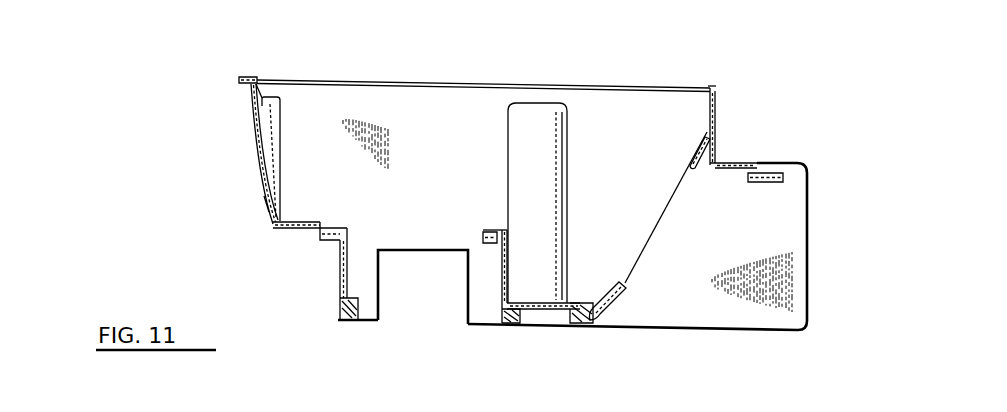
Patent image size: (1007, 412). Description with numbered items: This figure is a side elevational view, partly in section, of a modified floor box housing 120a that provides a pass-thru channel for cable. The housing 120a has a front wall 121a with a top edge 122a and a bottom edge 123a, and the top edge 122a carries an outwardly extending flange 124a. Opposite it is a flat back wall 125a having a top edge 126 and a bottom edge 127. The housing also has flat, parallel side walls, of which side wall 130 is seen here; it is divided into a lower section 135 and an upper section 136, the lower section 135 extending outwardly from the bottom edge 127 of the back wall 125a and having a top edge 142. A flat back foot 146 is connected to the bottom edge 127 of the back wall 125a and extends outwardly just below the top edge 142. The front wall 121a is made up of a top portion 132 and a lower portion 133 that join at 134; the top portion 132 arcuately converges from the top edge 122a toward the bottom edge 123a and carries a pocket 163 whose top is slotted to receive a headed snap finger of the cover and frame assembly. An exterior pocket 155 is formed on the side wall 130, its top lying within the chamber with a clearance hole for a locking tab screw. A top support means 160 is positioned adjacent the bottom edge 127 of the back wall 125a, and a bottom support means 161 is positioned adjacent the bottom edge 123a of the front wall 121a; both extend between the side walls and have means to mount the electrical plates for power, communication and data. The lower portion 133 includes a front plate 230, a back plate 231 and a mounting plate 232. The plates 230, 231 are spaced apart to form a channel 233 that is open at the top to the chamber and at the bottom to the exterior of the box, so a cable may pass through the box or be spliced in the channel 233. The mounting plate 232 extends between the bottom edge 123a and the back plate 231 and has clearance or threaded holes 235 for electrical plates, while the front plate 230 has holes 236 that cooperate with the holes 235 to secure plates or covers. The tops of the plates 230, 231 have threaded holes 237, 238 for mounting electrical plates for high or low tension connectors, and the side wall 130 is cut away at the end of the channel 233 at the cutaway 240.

The housing 120a is at (507, 84).
The front wall 121a is at (253, 147).
The top edge 122a is at (255, 78).
The bottom edge 123a is at (596, 329).
The outwardly extending flange 124a is at (253, 84).
The flat back wall 125a is at (716, 112).
The top edge 126 is at (713, 88).
The bottom edge 127 is at (711, 168).
The side wall 130 is at (457, 158).
The top portion 132 is at (264, 198).
The lower portion 133 is at (338, 295).
The junction 134 is at (275, 228).
The lower section 135 is at (745, 255).
The upper section 136 is at (647, 125).
The top edge 142 is at (800, 163).
The flat back foot 146 is at (753, 163).
The exterior pocket 155 is at (535, 213).
The top support means 160 is at (695, 160).
The bottom support means 161 is at (620, 301).
The pocket 163 is at (282, 163).
The front plate 230 is at (350, 256).
The back plate 231 is at (500, 283).
The mounting plate 232 is at (537, 310).
The channel 233 is at (499, 260).
The holes 235 is at (505, 322).
The holes 236 is at (348, 323).
The threaded hole 237 is at (336, 228).
The threaded hole 238 is at (483, 232).
The cutaway 240 is at (468, 310).